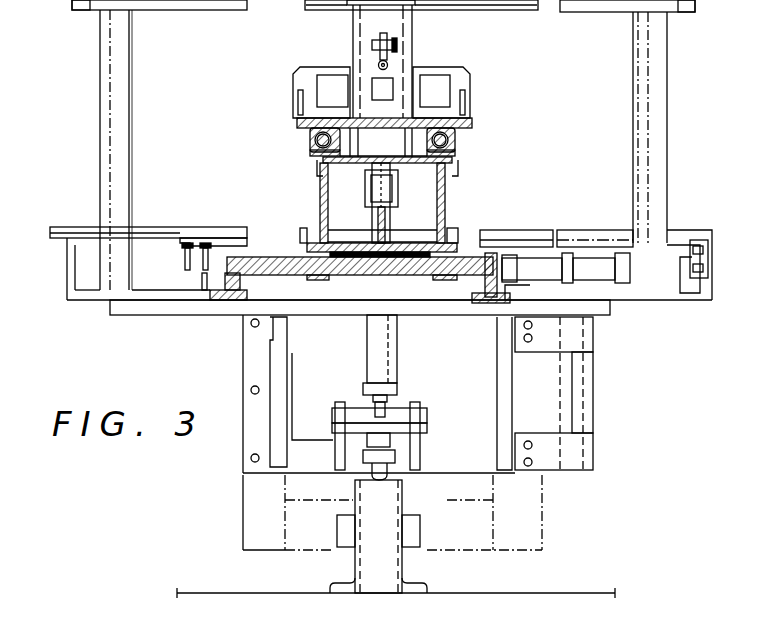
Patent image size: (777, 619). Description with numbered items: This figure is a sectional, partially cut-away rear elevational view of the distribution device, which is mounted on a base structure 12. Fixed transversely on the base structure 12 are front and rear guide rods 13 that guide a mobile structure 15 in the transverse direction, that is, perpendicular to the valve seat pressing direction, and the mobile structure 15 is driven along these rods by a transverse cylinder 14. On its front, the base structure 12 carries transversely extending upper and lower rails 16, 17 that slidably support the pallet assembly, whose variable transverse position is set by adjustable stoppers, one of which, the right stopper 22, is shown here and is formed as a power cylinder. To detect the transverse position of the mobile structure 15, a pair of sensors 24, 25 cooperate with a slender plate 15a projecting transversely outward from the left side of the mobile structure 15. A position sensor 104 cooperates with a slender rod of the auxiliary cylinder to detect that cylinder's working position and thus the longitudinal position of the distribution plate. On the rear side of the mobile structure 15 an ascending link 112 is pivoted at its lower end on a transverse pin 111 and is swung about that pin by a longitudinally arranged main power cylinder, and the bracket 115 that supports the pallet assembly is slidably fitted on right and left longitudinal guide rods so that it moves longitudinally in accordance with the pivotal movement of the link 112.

The base structure 12 is at (612, 305).
The guide rod 13 is at (270, 257).
The transverse cylinder 14 is at (595, 265).
The mobile structure 15 is at (445, 183).
The slender plate 15a is at (246, 238).
The upper rail 16 is at (523, 12).
The lower rail 17 is at (458, 232).
The right stopper 22 is at (535, 265).
The sensor 24 is at (186, 256).
The sensor 25 is at (204, 280).
The position sensor 104 is at (388, 40).
The transverse pin 111 is at (372, 221).
The ascending link 112 is at (397, 208).
The bracket 115 is at (472, 124).